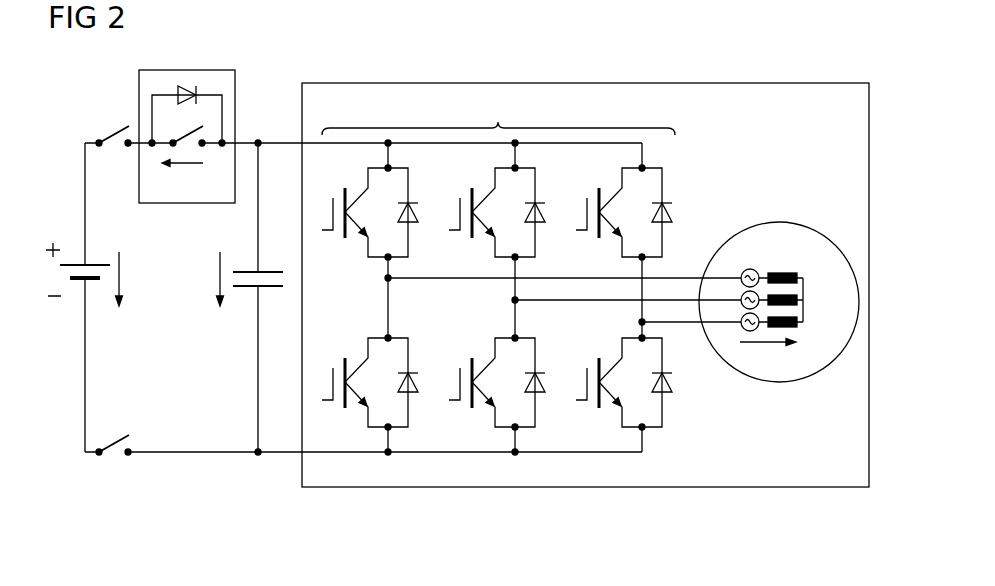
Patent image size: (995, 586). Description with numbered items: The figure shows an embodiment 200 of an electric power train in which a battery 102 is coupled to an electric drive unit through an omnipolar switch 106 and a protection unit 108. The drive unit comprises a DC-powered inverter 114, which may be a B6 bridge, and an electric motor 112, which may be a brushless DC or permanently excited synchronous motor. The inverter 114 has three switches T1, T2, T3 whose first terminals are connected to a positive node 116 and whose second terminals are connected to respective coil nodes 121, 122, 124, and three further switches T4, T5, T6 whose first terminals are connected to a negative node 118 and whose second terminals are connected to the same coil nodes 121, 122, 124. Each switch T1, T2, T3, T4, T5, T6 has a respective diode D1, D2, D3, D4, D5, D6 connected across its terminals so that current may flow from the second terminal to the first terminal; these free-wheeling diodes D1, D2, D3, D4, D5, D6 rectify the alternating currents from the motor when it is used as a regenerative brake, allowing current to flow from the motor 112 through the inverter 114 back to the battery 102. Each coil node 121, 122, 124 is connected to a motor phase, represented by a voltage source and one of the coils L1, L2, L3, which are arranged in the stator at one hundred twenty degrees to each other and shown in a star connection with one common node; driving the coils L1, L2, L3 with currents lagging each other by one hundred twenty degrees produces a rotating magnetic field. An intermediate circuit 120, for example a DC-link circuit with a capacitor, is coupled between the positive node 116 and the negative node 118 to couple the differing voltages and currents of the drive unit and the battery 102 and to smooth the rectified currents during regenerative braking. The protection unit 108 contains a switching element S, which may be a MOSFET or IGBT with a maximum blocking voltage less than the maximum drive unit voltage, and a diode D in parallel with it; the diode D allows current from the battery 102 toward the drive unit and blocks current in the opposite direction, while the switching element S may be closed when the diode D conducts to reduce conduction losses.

The electric power train 200 is at (71, 486).
The battery 102 is at (73, 295).
The omnipolar switch 106 is at (116, 128).
The protection unit 108 is at (233, 70).
The electric motor 112 is at (776, 222).
The inverter 114 is at (585, 285).
The positive node 116 is at (258, 141).
The negative node 118 is at (257, 455).
The intermediate circuit 120 is at (244, 296).
The coil node 121 is at (386, 278).
The coil node 122 is at (513, 300).
The coil node 124 is at (640, 322).
The diode D is at (190, 87).
The switching element S is at (204, 150).
The switch T1 is at (335, 192).
The switch T2 is at (462, 239).
The switch T3 is at (589, 239).
The further switch T4 is at (330, 409).
The further switch T5 is at (459, 409).
The further switch T6 is at (587, 409).
The diode D1 is at (414, 200).
The diode D2 is at (541, 200).
The diode D3 is at (668, 200).
The diode D4 is at (414, 370).
The diode D5 is at (541, 370).
The diode D6 is at (668, 370).
The coil L1 is at (785, 272).
The coil L2 is at (798, 302).
The coil L3 is at (795, 328).